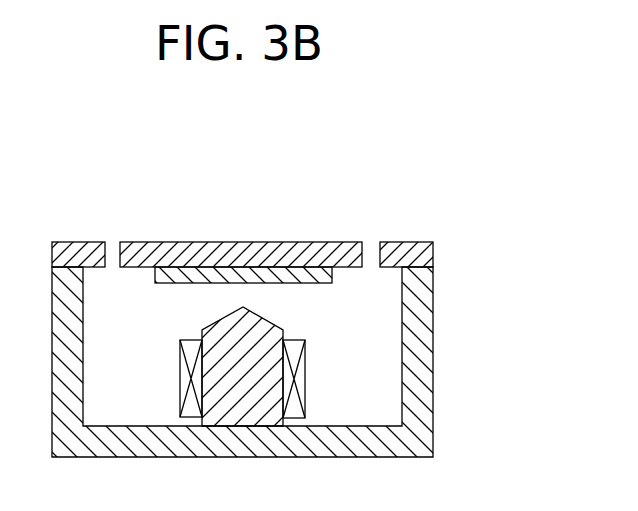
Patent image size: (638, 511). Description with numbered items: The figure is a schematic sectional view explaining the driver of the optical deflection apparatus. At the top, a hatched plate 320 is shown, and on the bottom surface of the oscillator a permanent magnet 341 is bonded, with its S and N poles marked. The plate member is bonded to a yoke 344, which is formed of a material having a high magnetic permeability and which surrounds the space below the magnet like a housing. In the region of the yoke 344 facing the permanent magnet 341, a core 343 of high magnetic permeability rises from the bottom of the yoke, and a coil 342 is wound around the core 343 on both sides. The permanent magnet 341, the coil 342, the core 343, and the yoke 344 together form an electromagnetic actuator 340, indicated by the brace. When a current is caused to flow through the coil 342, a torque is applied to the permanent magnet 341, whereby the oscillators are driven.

The top plate 320 is at (245, 243).
The electromagnetic actuator 340 is at (538, 446).
The permanent magnet 341 is at (330, 278).
The coil 342 is at (295, 408).
The core 343 is at (265, 372).
The yoke 344 is at (415, 327).